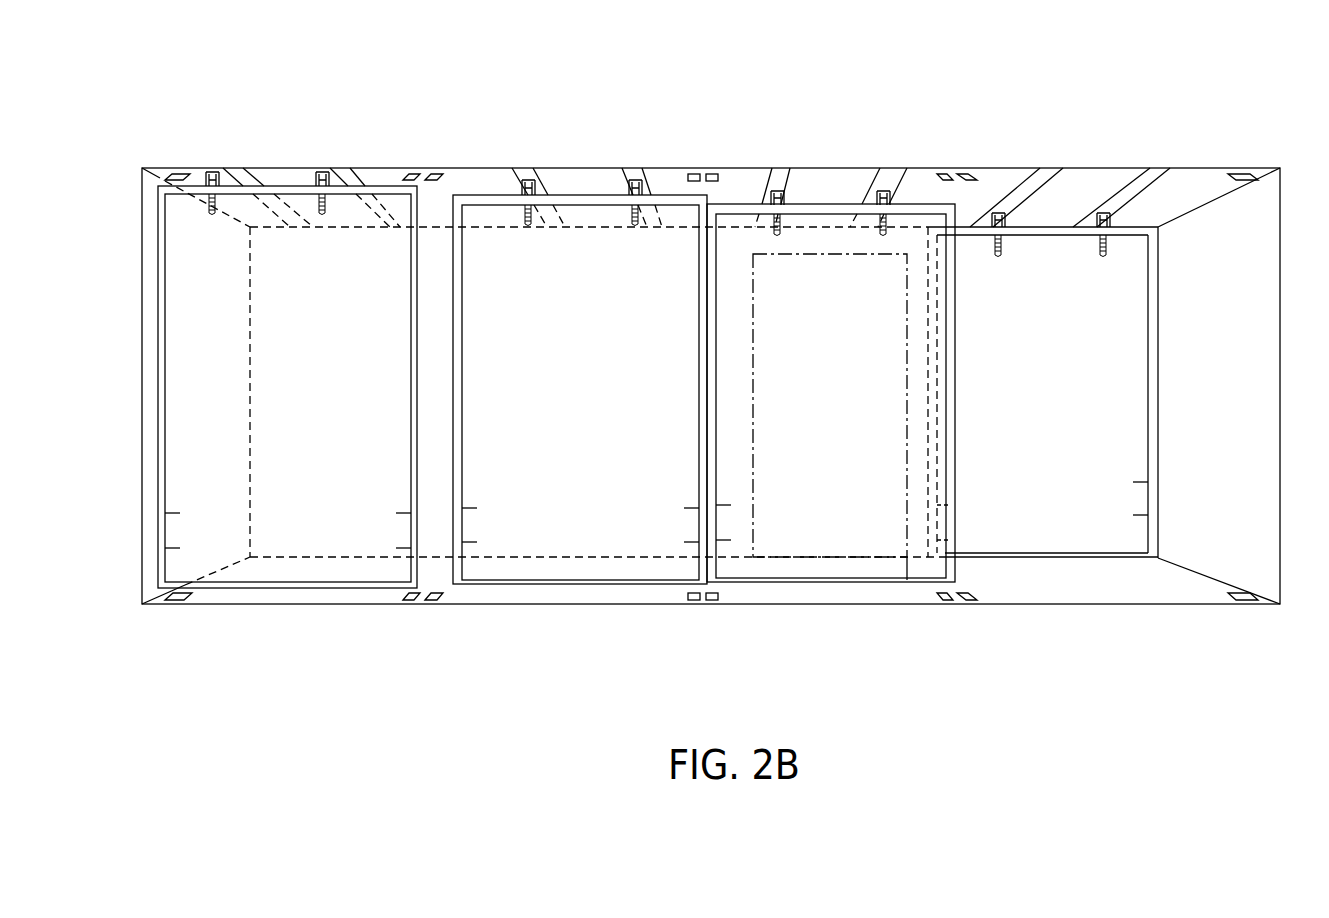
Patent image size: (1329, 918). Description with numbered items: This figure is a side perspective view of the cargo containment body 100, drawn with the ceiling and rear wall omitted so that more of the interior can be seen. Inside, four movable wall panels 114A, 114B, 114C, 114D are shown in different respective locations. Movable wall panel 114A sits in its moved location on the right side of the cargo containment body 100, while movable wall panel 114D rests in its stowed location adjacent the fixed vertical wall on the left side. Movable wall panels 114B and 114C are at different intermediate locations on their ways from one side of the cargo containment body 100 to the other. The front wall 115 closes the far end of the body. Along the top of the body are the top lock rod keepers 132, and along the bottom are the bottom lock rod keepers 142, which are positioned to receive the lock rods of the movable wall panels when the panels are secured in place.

The cargo containment body 100 is at (1142, 106).
The movable wall panel 114A is at (340, 428).
The movable wall panel 114B is at (600, 428).
The movable wall panel 114C is at (847, 428).
The movable wall panel 114D is at (1047, 428).
The front wall 115 is at (1230, 428).
The top lock rod keepers 132 is at (178, 173).
The bottom lock rod keepers 142 is at (178, 602).